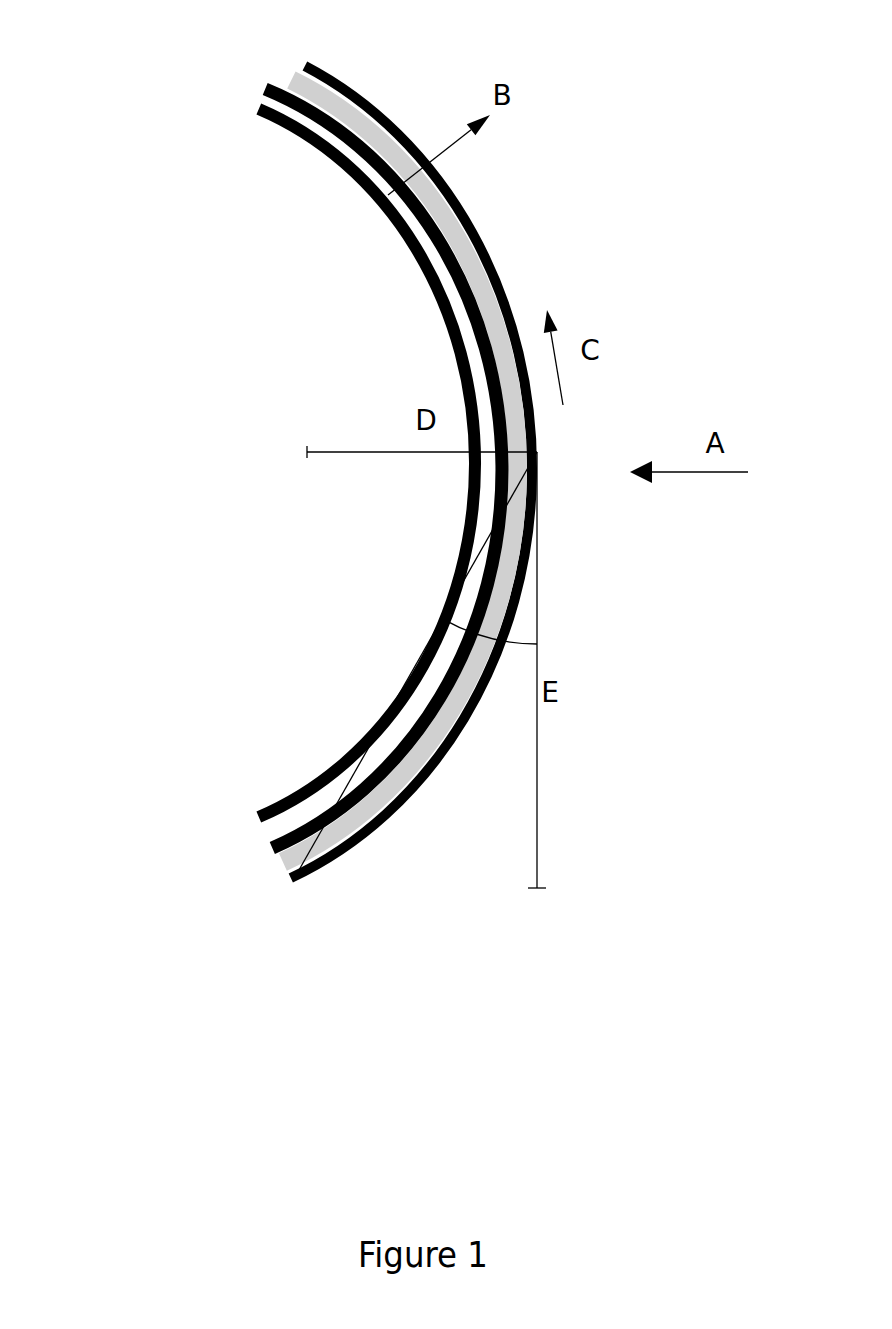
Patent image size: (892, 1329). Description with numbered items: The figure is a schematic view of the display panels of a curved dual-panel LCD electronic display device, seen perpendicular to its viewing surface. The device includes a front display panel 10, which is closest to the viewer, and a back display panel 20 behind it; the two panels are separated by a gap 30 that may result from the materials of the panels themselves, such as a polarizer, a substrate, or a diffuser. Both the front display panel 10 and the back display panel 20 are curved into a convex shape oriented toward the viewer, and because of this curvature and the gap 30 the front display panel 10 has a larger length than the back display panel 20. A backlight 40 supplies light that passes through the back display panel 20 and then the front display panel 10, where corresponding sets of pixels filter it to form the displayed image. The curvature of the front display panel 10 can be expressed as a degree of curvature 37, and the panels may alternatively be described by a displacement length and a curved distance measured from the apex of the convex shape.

The front display panel 10 is at (291, 878).
The back display panel 20 is at (272, 849).
The gap 30 is at (283, 73).
The backlight 40 is at (252, 110).
The degree of curvature 37 is at (438, 644).